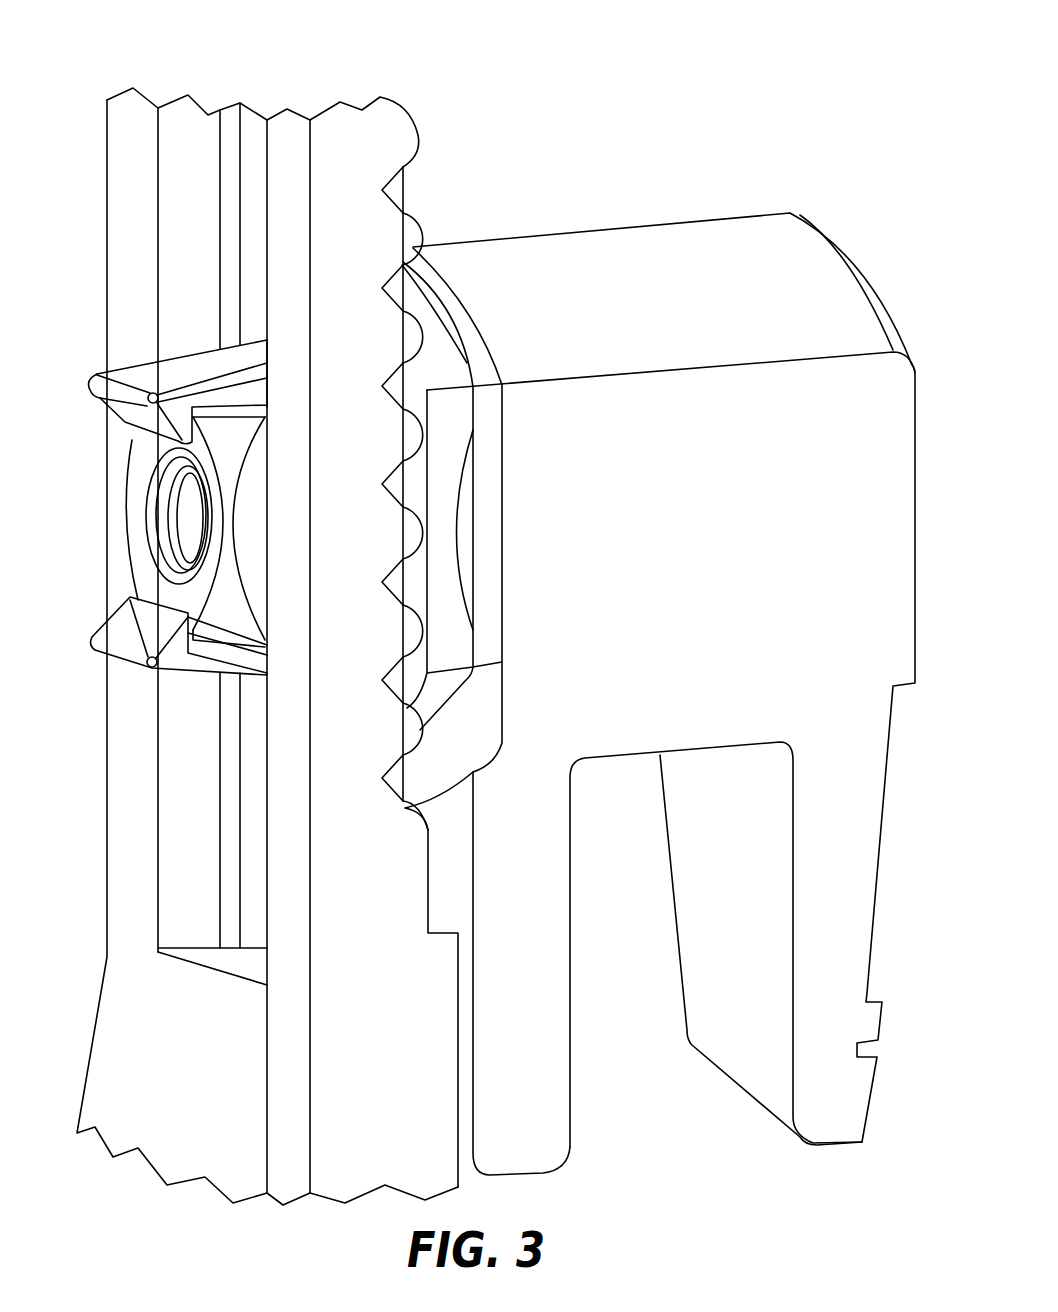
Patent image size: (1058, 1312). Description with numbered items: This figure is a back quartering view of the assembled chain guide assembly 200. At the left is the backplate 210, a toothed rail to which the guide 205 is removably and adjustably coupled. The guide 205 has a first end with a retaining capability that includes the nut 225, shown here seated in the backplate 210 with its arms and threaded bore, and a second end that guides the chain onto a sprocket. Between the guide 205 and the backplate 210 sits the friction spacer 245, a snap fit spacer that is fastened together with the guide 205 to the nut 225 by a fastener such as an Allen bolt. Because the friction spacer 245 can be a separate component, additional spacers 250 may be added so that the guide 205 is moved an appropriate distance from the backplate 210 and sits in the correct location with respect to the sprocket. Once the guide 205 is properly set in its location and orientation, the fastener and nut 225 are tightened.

The chain guide assembly 200 is at (743, 57).
The guide 205 is at (737, 238).
The backplate 210 is at (157, 137).
The nut 225 is at (135, 500).
The friction spacer 245 is at (437, 363).
The spacers 250 is at (487, 410).